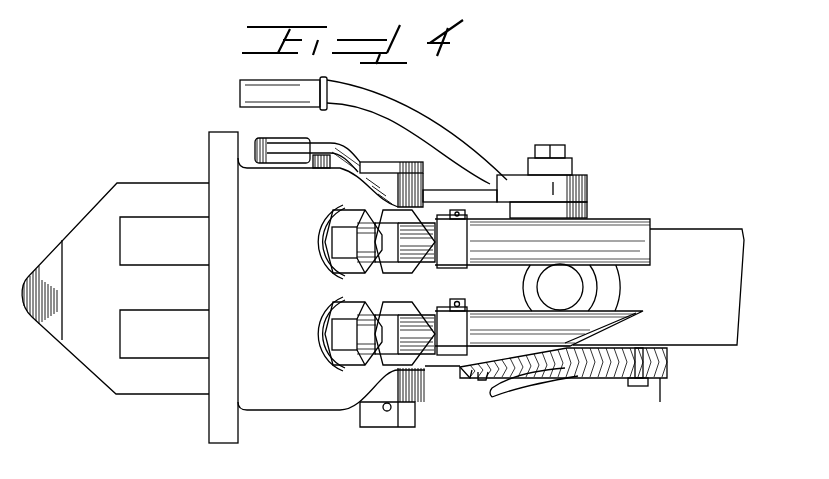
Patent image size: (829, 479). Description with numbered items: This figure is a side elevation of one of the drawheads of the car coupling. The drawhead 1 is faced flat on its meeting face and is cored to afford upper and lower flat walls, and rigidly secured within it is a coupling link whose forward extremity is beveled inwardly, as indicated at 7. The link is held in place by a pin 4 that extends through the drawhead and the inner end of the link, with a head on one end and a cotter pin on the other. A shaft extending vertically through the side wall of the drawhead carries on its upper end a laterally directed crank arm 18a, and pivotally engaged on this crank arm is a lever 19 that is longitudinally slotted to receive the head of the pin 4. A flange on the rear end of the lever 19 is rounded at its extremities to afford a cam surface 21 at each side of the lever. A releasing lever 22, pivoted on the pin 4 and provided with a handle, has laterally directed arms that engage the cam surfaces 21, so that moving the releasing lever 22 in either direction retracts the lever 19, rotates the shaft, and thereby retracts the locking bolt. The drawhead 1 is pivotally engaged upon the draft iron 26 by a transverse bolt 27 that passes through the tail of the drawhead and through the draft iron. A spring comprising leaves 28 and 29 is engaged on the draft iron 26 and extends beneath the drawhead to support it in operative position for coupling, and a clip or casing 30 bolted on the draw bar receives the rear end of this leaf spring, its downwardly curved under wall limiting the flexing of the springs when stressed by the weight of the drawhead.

The drawhead 1 is at (295, 427).
The beveled point 7 is at (52, 310).
The crank arm 18a is at (292, 134).
The lever 19 is at (352, 153).
The pin 4 is at (388, 167).
The releasing lever 22 is at (432, 125).
The cam surface 21 is at (507, 185).
The draft iron 26 is at (705, 250).
The transverse bolt 27 is at (575, 287).
The spring leaf 28 is at (465, 376).
The spring leaf 29 is at (483, 376).
The clip or casing 30 is at (658, 378).